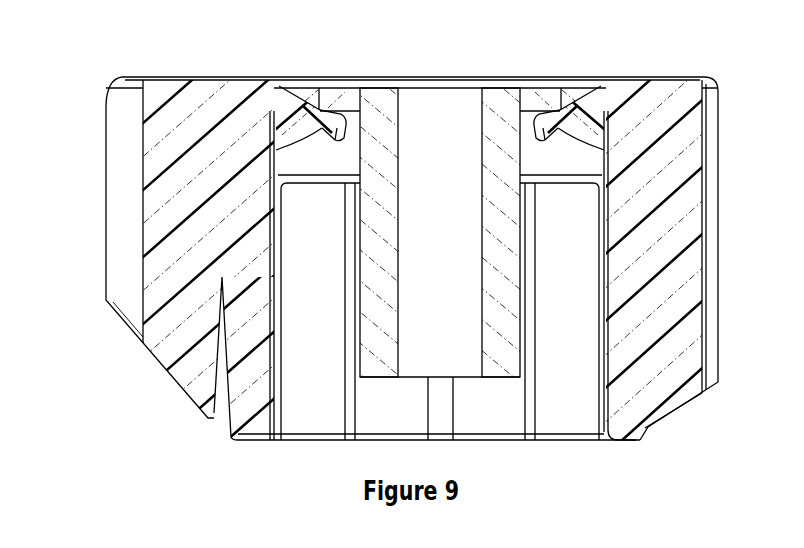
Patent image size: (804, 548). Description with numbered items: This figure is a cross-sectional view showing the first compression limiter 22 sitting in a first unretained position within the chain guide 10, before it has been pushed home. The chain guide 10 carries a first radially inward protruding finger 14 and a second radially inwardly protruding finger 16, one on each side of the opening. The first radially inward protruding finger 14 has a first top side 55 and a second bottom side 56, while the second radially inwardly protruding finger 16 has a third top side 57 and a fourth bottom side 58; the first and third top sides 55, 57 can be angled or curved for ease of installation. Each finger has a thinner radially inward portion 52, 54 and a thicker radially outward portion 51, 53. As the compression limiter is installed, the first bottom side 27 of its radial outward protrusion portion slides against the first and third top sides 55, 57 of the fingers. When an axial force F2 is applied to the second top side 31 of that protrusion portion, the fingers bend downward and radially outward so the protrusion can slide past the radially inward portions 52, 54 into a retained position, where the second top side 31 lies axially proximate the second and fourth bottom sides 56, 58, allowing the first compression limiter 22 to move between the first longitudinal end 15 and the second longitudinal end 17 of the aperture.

The chain guide 10 is at (207, 90).
The first radially inward protruding finger 14 is at (319, 116).
The first longitudinal end 15 is at (355, 336).
The second radially inwardly protruding finger 16 is at (566, 120).
The second longitudinal end 17 is at (525, 265).
The first compression limiter 22 is at (522, 323).
The first bottom side 27 is at (532, 125).
The second top side 31 is at (500, 88).
The radially outward portion 51 is at (287, 110).
The radially inward portion 52 is at (334, 132).
The radially outward portion 53 is at (593, 110).
The radially inward portion 54 is at (546, 135).
The first top side 55 is at (320, 107).
The second bottom side 56 is at (307, 143).
The third top side 57 is at (563, 113).
The fourth bottom side 58 is at (566, 132).
The axial force F2 is at (378, 76).